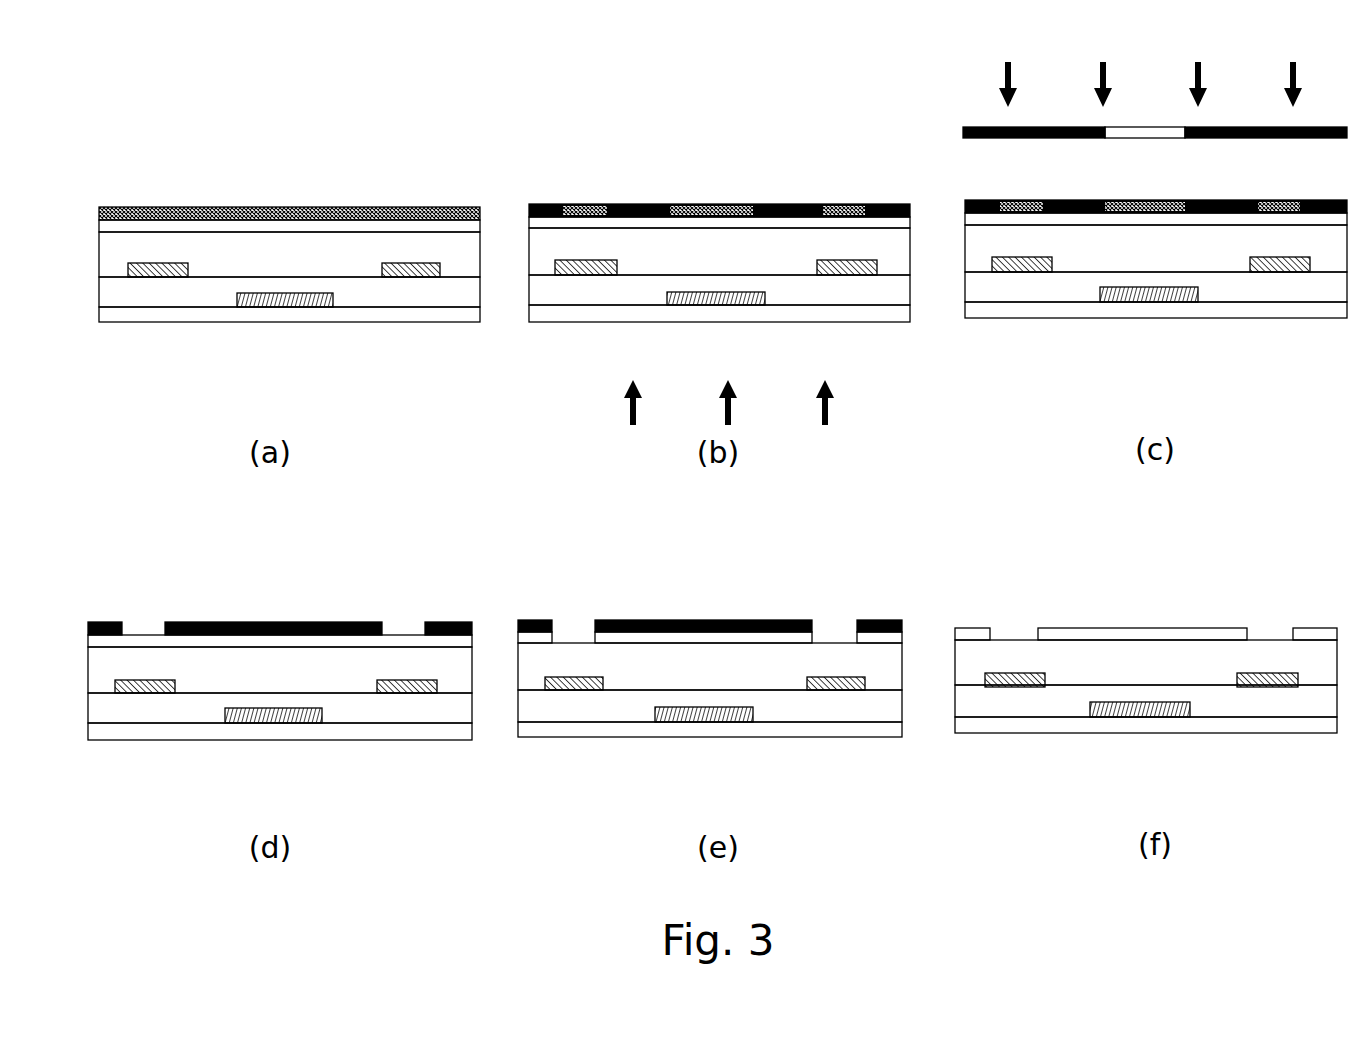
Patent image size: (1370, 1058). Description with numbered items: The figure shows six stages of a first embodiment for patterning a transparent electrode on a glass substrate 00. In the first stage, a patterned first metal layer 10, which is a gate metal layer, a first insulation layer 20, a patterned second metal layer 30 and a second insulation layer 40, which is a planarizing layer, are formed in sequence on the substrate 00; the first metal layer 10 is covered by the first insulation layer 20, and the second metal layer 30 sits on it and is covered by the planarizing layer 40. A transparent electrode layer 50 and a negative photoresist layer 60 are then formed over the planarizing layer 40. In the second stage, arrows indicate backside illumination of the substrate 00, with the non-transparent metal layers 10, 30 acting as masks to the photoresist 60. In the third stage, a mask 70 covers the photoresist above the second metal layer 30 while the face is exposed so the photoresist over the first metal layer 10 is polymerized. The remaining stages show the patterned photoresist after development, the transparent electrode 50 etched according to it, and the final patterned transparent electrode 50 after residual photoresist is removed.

The glass substrate 00 is at (363, 318).
The first metal layer 10 is at (283, 303).
The first insulation layer 20 is at (207, 295).
The second metal layer 30 is at (143, 280).
The second insulation layer 40 is at (353, 247).
The transparent electrode layer 50 is at (240, 225).
The negative photoresist layer 60 is at (170, 207).
The mask 70 is at (1333, 127).